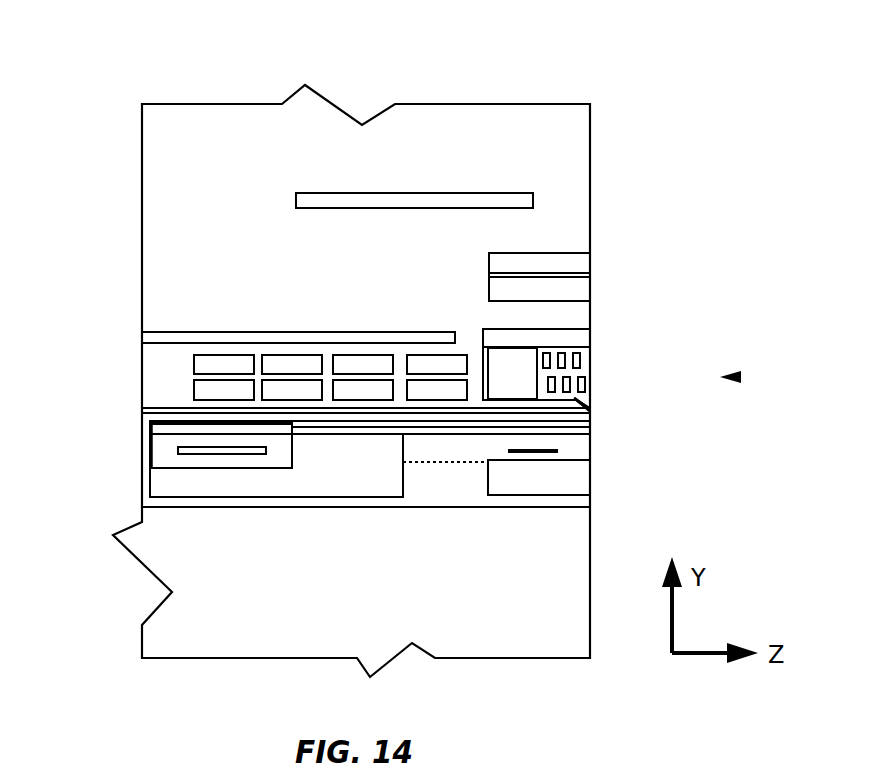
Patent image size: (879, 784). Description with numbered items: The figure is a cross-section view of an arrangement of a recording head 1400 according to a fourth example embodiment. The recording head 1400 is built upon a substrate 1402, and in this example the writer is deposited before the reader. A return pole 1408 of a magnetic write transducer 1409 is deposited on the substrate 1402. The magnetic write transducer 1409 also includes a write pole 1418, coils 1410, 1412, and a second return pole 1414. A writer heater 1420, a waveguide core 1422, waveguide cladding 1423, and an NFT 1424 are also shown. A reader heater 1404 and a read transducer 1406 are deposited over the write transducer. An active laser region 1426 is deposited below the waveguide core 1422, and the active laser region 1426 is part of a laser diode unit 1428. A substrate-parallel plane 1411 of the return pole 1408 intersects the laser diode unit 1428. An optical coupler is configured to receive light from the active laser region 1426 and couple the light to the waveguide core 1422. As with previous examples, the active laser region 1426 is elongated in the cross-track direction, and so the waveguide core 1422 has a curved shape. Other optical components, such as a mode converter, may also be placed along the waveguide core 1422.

The recording head 1400 is at (504, 62).
The substrate 1402 is at (525, 645).
The reader heater 1404 is at (437, 210).
The read transducer 1406 is at (583, 280).
The return pole 1408 is at (575, 475).
The magnetic write transducer 1409 is at (740, 375).
The coil 1410 is at (379, 355).
The substrate-parallel plane 1411 is at (436, 463).
The coil 1412 is at (582, 386).
The second return pole 1414 is at (582, 339).
The write pole 1418 is at (592, 409).
The writer heater 1420 is at (558, 451).
The waveguide core 1422 is at (360, 423).
The waveguide cladding 1423 is at (150, 420).
The NFT 1424 is at (580, 419).
The active laser region 1426 is at (222, 462).
The laser diode unit 1428 is at (318, 490).